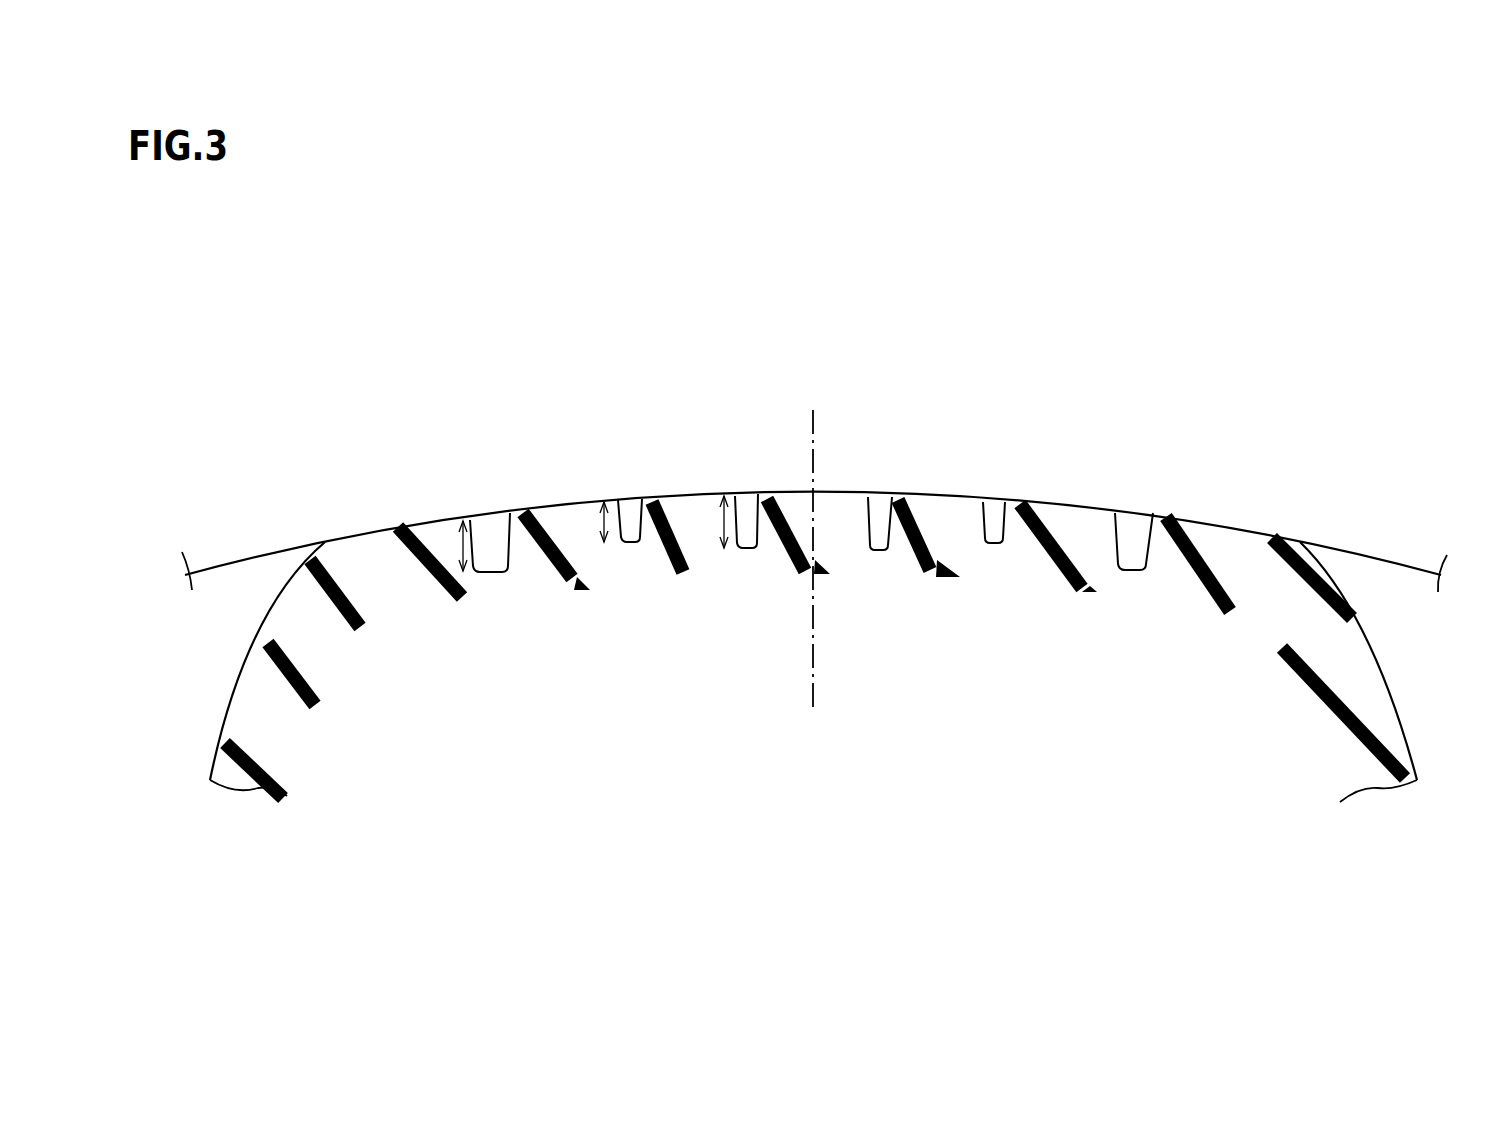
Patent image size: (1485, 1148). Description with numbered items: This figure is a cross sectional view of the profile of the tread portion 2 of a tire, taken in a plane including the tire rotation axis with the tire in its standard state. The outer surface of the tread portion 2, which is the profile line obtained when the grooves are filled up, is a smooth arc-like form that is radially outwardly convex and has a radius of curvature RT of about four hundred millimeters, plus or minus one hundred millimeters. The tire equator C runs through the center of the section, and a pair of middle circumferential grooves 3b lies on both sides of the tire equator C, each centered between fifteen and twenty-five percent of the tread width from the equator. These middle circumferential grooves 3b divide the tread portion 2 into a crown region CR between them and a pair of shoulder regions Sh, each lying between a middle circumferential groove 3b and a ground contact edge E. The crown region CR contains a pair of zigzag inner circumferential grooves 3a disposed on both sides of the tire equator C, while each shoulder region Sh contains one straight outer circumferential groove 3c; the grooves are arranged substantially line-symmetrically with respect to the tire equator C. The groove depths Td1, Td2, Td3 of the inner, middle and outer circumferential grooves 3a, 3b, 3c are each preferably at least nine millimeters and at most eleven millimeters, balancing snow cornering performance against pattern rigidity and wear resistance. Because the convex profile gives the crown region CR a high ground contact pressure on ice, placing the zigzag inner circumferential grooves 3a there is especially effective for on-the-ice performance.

The tread portion 2 is at (1083, 457).
The inner circumferential groove 3a is at (748, 503).
The middle circumferential groove 3b is at (630, 503).
The outer circumferential groove 3c is at (492, 513).
The tire equator C is at (813, 544).
The crown region CR is at (841, 453).
The ground contact edge E is at (327, 542).
The shoulder region Sh is at (563, 483).
The radius of curvature RT is at (932, 500).
The groove depth of inner circumferential groove Td1 is at (722, 520).
The groove depth of middle circumferential groove Td2 is at (598, 535).
The groove depth of outer circumferential groove Td3 is at (460, 547).